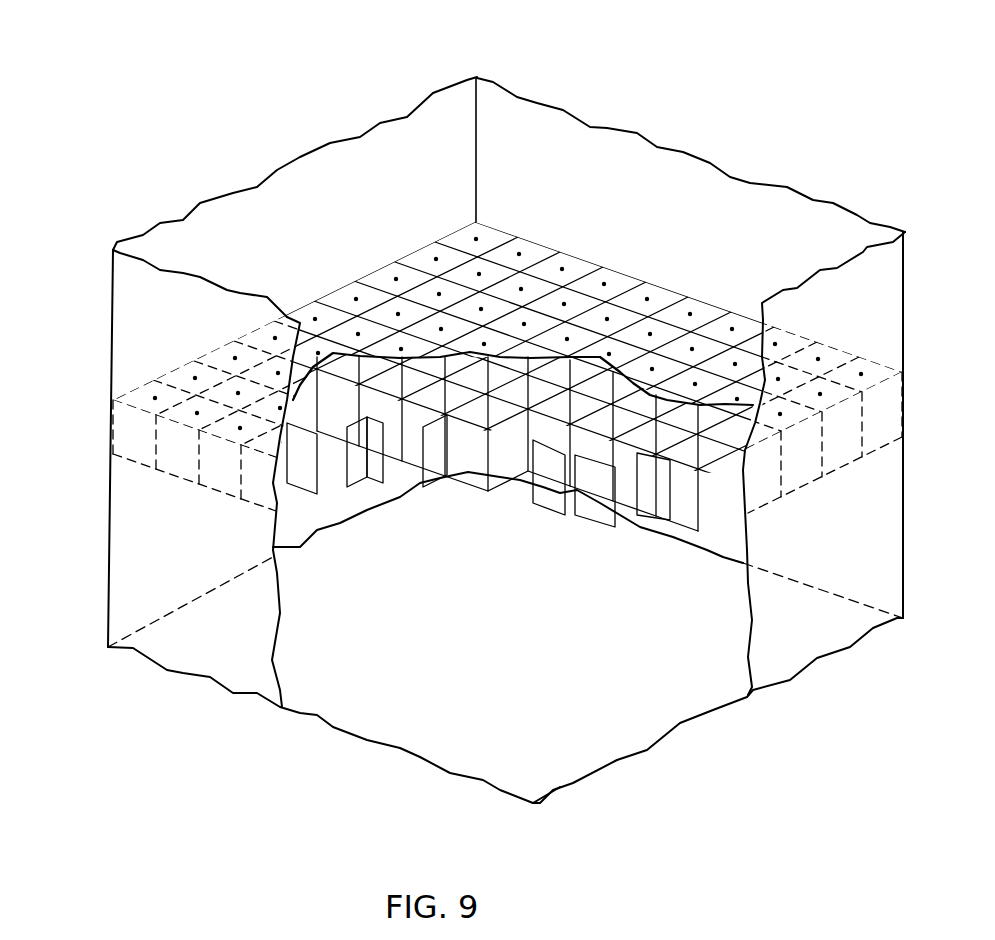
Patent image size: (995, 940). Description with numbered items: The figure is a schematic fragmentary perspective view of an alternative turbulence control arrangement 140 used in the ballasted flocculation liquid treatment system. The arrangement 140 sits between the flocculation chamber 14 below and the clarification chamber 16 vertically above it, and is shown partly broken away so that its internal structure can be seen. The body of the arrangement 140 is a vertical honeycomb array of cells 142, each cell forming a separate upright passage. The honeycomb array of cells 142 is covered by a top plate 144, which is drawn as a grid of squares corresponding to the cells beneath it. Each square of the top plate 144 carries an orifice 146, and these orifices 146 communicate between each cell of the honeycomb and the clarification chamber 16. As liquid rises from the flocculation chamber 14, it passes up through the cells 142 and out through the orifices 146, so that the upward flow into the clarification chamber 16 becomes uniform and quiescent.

The flocculation chamber 14 is at (195, 657).
The clarification chamber 16 is at (130, 295).
The turbulence control arrangement 140 is at (507, 420).
The honeycomb array of cells 142 is at (462, 486).
The top plate 144 is at (380, 277).
The orifices 146 is at (477, 237).